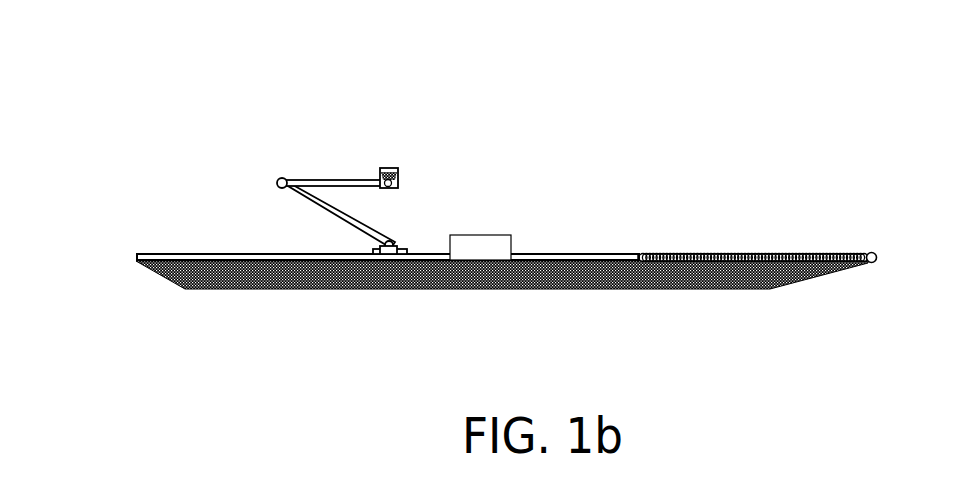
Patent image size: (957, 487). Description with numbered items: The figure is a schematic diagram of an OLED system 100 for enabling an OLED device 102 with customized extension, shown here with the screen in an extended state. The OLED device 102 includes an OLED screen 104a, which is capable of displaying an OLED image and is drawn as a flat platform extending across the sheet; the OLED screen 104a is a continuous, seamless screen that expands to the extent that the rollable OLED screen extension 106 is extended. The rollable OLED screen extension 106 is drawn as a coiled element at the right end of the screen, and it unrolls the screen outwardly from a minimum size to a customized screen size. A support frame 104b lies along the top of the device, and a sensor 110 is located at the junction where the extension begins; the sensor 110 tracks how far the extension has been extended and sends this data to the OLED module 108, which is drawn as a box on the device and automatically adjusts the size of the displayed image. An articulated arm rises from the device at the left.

The OLED system 100 is at (126, 90).
The OLED device 102 is at (295, 211).
The OLED screen 104a is at (679, 294).
The support frame 104b is at (557, 250).
The rollable OLED screen extension 106 is at (772, 250).
The OLED module 108 is at (480, 249).
The sensor 110 is at (639, 250).